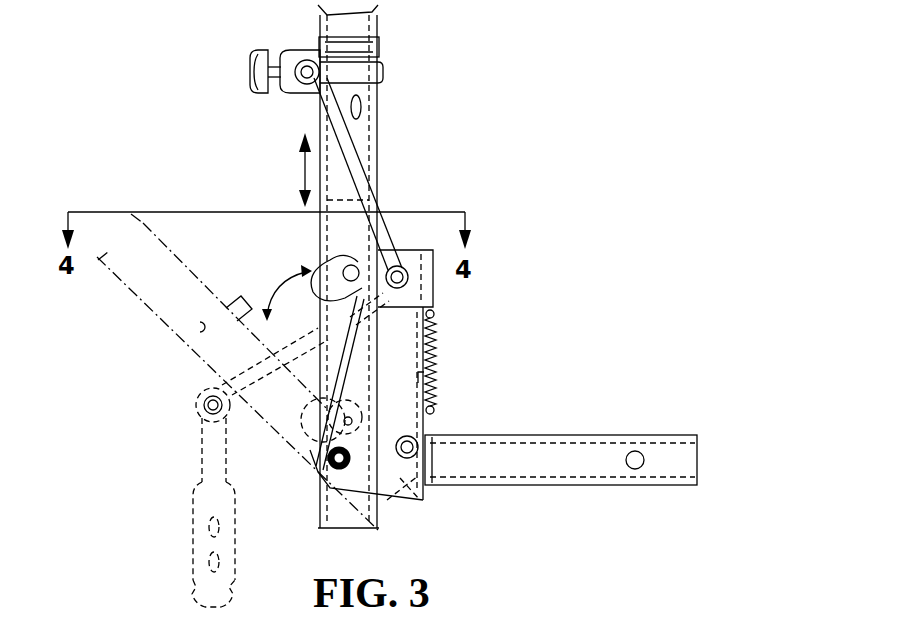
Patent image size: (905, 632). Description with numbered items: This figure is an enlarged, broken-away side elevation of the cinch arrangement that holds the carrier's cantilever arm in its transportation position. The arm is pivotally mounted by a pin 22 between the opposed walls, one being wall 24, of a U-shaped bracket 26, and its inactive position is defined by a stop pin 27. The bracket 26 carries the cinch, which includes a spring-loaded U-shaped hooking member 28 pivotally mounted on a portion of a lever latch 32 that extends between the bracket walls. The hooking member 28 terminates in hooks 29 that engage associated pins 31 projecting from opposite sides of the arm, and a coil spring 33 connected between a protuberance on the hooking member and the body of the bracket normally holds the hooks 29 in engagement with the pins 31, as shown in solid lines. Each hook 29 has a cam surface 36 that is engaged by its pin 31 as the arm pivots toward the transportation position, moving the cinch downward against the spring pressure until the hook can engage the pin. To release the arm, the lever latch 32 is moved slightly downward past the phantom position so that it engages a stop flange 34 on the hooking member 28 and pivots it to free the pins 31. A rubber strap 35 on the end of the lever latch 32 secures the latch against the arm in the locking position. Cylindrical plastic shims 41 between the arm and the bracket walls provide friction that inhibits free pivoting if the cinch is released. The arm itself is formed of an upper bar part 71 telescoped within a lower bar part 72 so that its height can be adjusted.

The pin 22 is at (317, 478).
The wall 24 is at (418, 376).
The U-shaped bracket 26 is at (423, 500).
The stop pin 27 is at (428, 431).
The hooking member 28 is at (433, 249).
The hook 29 is at (305, 270).
The pin 31 is at (357, 268).
The lever latch 32 is at (350, 153).
The coil spring 33 is at (434, 333).
The stop flange 34 is at (380, 324).
The rubber strap 35 is at (283, 60).
The cam surface 36 is at (328, 263).
The cylindrical plastic shim 41 is at (362, 420).
The upper bar part 71 is at (378, 25).
The lower bar part 72 is at (384, 43).